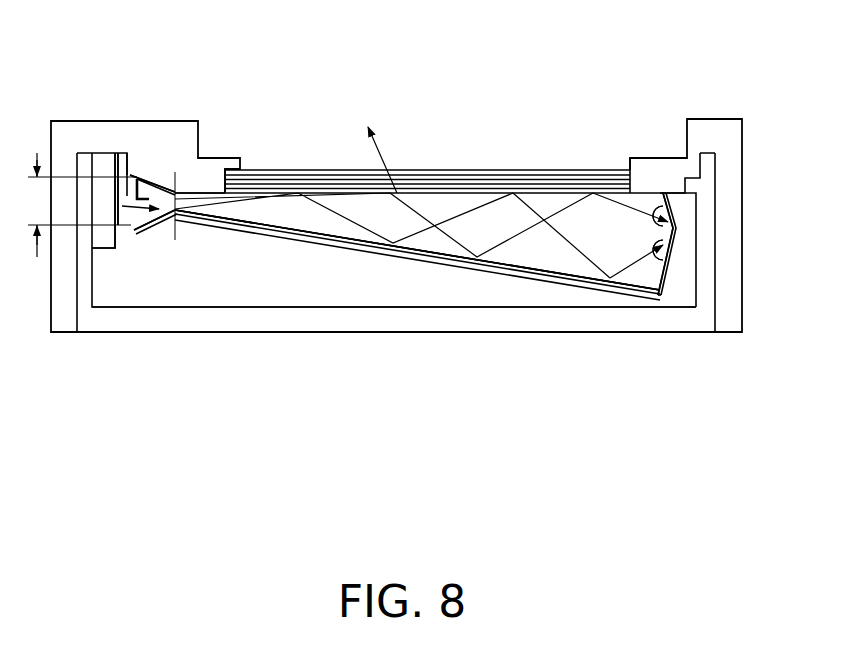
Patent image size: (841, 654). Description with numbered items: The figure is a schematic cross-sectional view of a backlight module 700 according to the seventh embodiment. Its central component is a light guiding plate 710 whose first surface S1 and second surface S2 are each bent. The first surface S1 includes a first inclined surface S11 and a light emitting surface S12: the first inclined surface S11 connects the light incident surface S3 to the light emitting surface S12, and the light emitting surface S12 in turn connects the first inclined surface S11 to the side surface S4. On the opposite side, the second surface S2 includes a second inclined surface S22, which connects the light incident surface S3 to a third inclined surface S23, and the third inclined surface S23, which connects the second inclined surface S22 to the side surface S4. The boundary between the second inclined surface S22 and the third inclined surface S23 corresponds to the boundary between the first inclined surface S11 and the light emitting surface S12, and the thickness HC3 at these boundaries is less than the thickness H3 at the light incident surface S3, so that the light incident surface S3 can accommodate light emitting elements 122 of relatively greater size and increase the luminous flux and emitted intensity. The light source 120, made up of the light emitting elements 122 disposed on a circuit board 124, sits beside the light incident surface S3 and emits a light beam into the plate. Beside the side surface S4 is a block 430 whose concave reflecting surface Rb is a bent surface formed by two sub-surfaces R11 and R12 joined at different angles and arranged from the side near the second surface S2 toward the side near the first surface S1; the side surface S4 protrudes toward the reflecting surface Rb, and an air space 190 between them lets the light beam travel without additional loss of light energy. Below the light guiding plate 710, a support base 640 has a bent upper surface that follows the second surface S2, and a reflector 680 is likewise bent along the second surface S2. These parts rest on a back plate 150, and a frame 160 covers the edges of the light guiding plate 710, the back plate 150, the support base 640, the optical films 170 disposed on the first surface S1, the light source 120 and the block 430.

The backlight module 700 is at (710, 359).
The frame 160 is at (62, 322).
The back plate 150 is at (111, 322).
The support base 640 is at (487, 296).
The light source 120 is at (68, 63).
The circuit board 124 is at (103, 160).
The light emitting elements 122 is at (118, 186).
The light incident surface S3 is at (129, 191).
The first surface S1 is at (200, 63).
The first inclined surface S11 is at (208, 192).
The light emitting surface S12 is at (162, 185).
The second surface S2 is at (245, 375).
The second inclined surface S22 is at (156, 224).
The third inclined surface S23 is at (218, 220).
The reflector 680 is at (357, 244).
The light guiding plate 710 is at (553, 272).
The thickness at the boundaries HC3 is at (175, 209).
The thickness at the light incident surface H3 is at (71, 205).
The optical films 170 is at (433, 169).
The side surface S4 is at (666, 191).
The block 430 is at (690, 282).
The sub-surface R11 is at (666, 212).
The sub-surface R12 is at (666, 250).
The reflecting surface Rb is at (800, 172).
The air space 190 is at (655, 290).